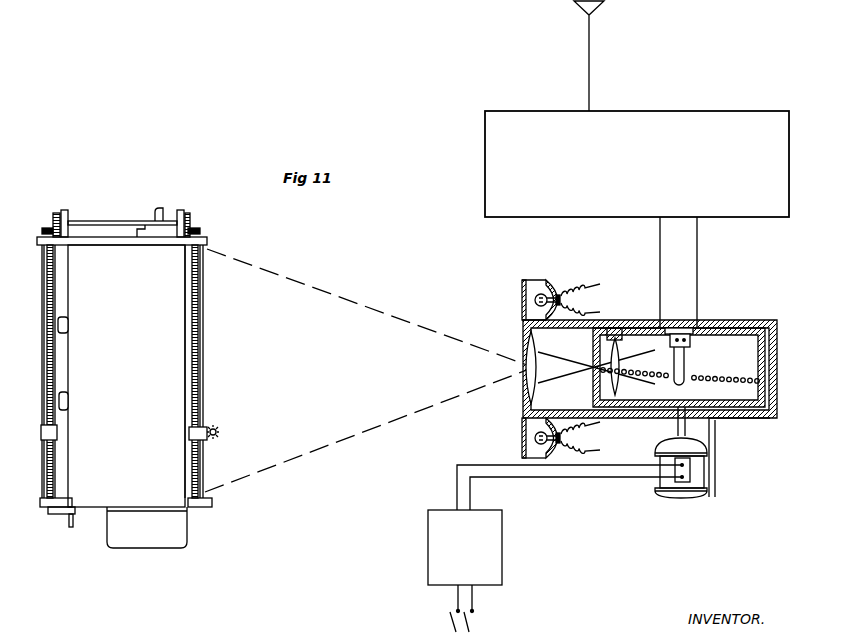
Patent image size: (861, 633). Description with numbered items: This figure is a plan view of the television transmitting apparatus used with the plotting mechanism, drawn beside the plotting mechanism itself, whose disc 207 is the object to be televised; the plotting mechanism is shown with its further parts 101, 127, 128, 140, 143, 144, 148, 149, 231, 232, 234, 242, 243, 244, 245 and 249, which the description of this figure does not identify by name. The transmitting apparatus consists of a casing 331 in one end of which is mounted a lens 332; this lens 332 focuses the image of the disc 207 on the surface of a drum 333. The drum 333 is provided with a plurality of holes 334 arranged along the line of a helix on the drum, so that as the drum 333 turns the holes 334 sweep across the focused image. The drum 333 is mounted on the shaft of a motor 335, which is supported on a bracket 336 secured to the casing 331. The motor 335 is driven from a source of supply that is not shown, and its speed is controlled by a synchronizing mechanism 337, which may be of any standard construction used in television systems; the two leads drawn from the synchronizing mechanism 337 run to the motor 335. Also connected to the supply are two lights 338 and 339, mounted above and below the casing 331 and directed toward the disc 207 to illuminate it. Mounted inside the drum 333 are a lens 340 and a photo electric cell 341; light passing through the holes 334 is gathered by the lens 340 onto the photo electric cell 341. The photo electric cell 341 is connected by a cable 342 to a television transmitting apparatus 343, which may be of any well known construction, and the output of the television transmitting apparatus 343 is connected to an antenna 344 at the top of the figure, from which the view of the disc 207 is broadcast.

The film/display body 101 is at (176, 308).
The knob 127 is at (68, 399).
The knob 128 is at (68, 325).
The clamp block 140 is at (52, 433).
The guide strip 143 is at (52, 488).
The guide rail 144 is at (52, 469).
The bottom bracket 148 is at (68, 527).
The top bracket 149 is at (45, 228).
The disc 207 is at (190, 361).
The side rail 231 is at (203, 322).
The chain strip 232 is at (197, 335).
The lamp 234 is at (219, 432).
The block 242 is at (201, 230).
The upright plate 243 is at (186, 216).
The cross bar 244 is at (98, 221).
The upright post 245 is at (57, 212).
The latch 249 is at (156, 209).
The casing 331 is at (766, 320).
The lens 332 is at (526, 352).
The drum 333 is at (715, 345).
The holes 334 is at (738, 388).
The motor 335 is at (684, 493).
The bracket 336 is at (712, 471).
The synchronizing mechanism 337 is at (496, 538).
The light 338 is at (545, 285).
The light 339 is at (535, 438).
The lens 340 is at (622, 345).
The photo electric cell 341 is at (676, 386).
The cable 342 is at (697, 258).
The television transmitting apparatus 343 is at (745, 119).
The antenna 344 is at (582, 9).